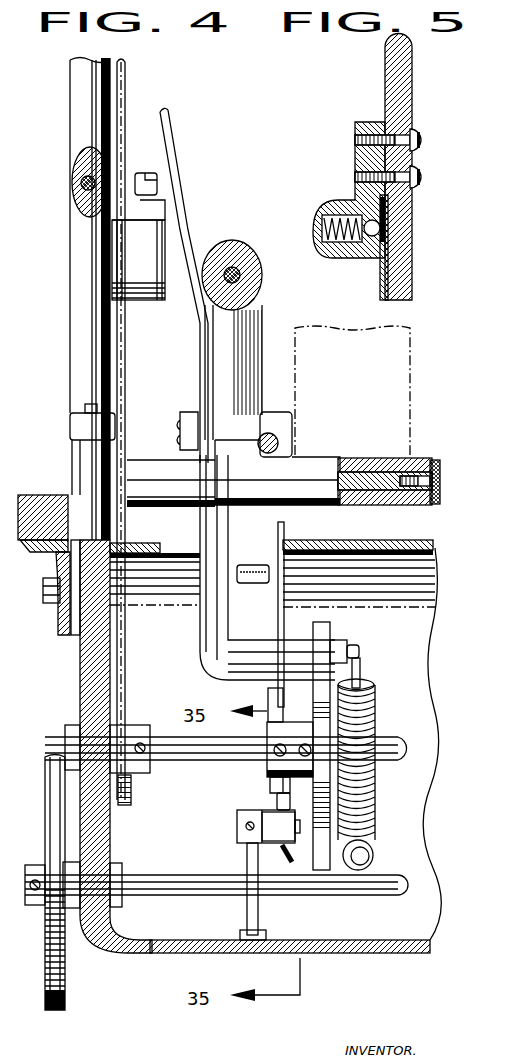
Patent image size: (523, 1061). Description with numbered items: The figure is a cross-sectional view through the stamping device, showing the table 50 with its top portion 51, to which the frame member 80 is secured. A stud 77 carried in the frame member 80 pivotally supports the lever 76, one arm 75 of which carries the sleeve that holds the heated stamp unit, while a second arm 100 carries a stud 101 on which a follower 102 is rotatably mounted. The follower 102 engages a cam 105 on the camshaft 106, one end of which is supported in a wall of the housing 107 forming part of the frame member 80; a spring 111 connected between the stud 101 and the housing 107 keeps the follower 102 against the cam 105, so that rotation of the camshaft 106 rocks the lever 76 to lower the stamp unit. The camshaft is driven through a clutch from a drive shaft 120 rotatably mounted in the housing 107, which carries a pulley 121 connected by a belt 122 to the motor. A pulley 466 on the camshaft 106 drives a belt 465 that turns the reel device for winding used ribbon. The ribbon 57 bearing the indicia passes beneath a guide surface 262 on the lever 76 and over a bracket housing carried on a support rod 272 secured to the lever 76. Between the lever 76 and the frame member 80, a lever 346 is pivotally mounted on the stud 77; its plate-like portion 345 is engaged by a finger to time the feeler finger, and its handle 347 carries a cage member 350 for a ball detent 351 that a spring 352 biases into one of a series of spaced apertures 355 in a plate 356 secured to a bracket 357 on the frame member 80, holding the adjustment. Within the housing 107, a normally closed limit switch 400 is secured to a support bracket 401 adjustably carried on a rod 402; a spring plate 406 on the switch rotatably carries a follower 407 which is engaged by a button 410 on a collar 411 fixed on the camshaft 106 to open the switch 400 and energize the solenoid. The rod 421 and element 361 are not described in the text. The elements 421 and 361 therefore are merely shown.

In FIG. 4, the guide bar 421 is at (70, 118).
In FIG. 4, the belt 465 is at (127, 91).
In FIG. 4, the pulley 466 is at (131, 798).
In FIG. 4, the cage member 350 is at (140, 182).
In FIG. 5, the cage member 350 is at (330, 203).
In FIG. 4, the plate 356 is at (157, 222).
In FIG. 5, the plate 356 is at (381, 286).
In FIG. 4, the bracket 357 is at (70, 273).
In FIG. 4, the handle 347 is at (177, 240).
In FIG. 5, the handle 347 is at (386, 90).
In FIG. 4, the arm 75 is at (253, 258).
In FIG. 4, the support rod 272 is at (276, 435).
In FIG. 4, the lever 76 is at (313, 462).
In FIG. 4, the stud 77 is at (368, 477).
In FIG. 4, the guide surface 262 is at (430, 497).
In FIG. 4, the paper strip or ribbon 57 is at (412, 364).
In FIG. 4, the frame member 80 is at (70, 477).
In FIG. 4, the top portion 51 is at (28, 498).
In FIG. 4, the table 50 is at (50, 597).
In FIG. 4, the lever 346 is at (200, 526).
In FIG. 4, the rod 361 is at (285, 532).
In FIG. 4, the plate-like portion 345 is at (256, 585).
In FIG. 4, the second arm 100 is at (205, 660).
In FIG. 4, the follower 102 is at (332, 632).
In FIG. 4, the stud 101 is at (347, 650).
In FIG. 4, the cam 105 is at (327, 730).
In FIG. 4, the spring 111 is at (373, 835).
In FIG. 4, the camshaft 106 is at (182, 762).
In FIG. 4, the button 410 is at (270, 780).
In FIG. 4, the collar 411 is at (272, 771).
In FIG. 4, the follower 407 is at (277, 800).
In FIG. 4, the spring plate 406 is at (262, 814).
In FIG. 4, the support bracket 401 is at (246, 828).
In FIG. 4, the limit switch 400 is at (280, 830).
In FIG. 4, the rod 402 is at (246, 908).
In FIG. 4, the drive shaft 120 is at (358, 895).
In FIG. 4, the pulley 121 is at (66, 995).
In FIG. 4, the belt 122 is at (55, 1012).
In FIG. 4, the housing 107 is at (338, 954).
In FIG. 5, the ball detent 351 is at (378, 244).
In FIG. 5, the spring 352 is at (323, 228).
In FIG. 5, the apertures 355 is at (380, 232).